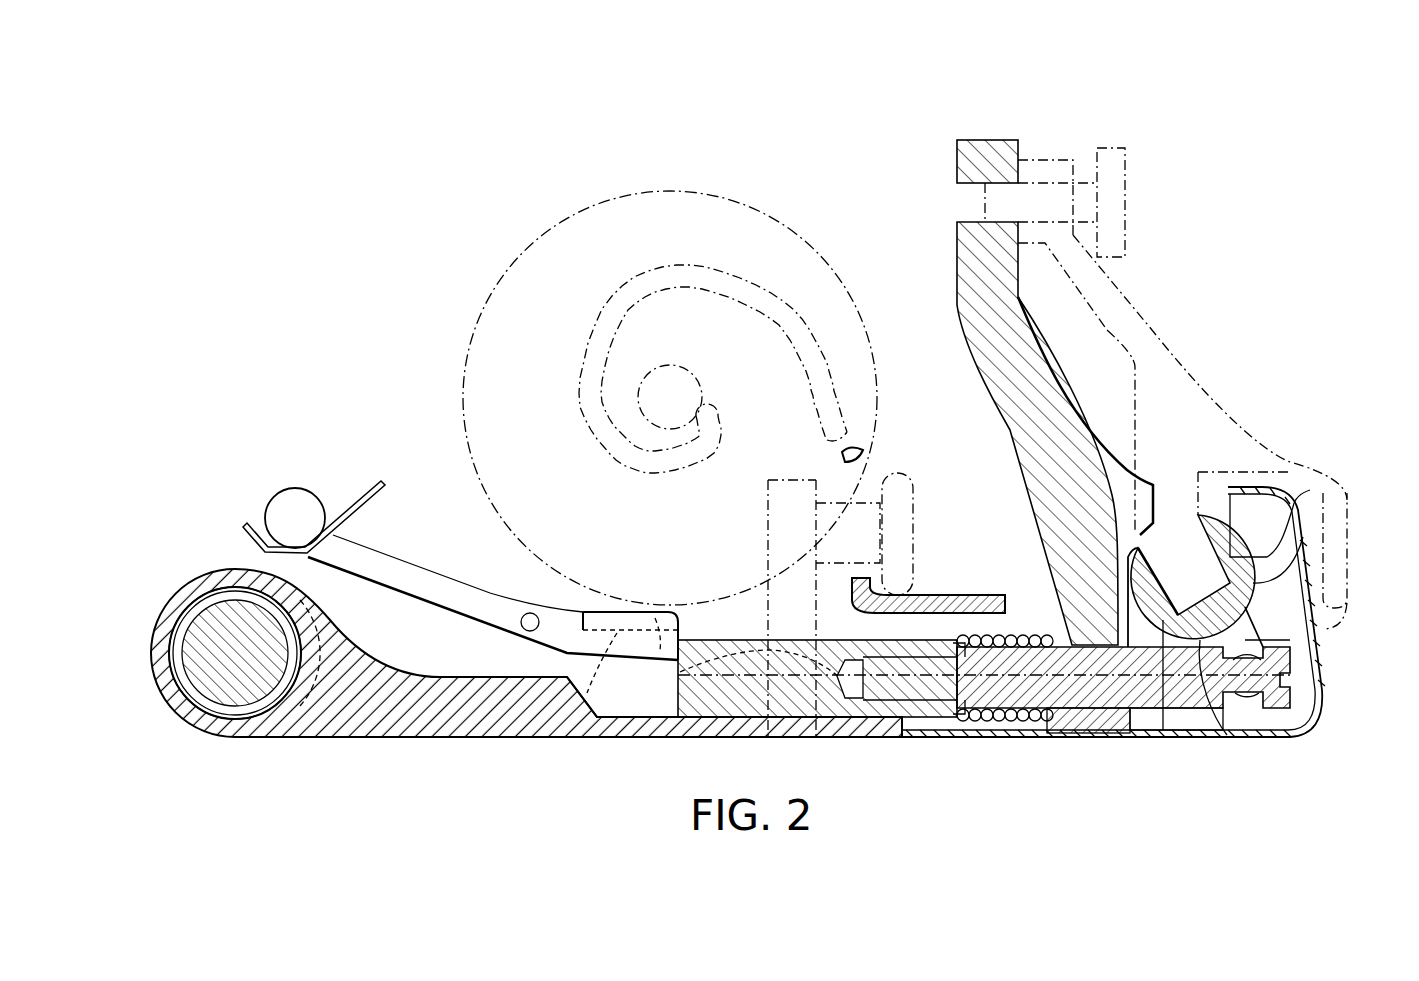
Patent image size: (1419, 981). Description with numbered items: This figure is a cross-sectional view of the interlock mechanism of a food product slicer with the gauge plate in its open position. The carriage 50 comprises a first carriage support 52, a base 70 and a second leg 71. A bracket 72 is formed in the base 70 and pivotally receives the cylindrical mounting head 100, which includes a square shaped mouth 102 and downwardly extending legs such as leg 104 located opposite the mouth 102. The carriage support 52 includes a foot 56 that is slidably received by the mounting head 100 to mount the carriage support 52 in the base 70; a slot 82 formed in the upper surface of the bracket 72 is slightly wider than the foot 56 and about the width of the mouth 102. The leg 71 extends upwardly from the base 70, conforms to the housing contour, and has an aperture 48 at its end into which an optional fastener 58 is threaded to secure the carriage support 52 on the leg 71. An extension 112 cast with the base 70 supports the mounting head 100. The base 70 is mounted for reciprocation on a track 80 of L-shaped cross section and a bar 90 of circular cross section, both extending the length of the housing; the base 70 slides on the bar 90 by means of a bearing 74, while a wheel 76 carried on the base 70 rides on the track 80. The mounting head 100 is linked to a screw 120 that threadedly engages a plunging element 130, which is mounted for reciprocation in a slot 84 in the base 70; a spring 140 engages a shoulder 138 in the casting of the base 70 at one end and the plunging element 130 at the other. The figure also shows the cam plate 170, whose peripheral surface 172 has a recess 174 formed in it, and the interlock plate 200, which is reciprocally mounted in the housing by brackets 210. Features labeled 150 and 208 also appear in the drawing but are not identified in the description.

The aperture 48 is at (955, 205).
The carriage 50 is at (1232, 336).
The first carriage support 52 is at (1170, 340).
The foot 56 is at (1212, 580).
The fastener 58 is at (1127, 163).
The base 70 is at (460, 712).
The second leg 71 is at (987, 152).
The bracket 72 is at (1303, 537).
The bearing 74 is at (178, 663).
The wheel 76 is at (903, 523).
The track 80 is at (967, 602).
The slot 82 is at (1165, 485).
The slot 84 is at (647, 700).
The bar 90 is at (207, 622).
The mounting head 100 is at (1297, 491).
The mouth 102 is at (1197, 530).
The leg 104 is at (1290, 640).
The extension 112 is at (1183, 720).
The screw 120 is at (1227, 735).
The plunging element 130 is at (830, 710).
The shoulder 138 is at (1032, 720).
The spring 140 is at (1003, 722).
The hidden passage 150 is at (590, 700).
The cam plate 170 is at (592, 205).
The peripheral surface 172 is at (725, 198).
The recess 174 is at (863, 455).
The interlock plate 200 is at (432, 570).
The lever block 208 is at (660, 600).
The brackets 210 is at (348, 500).